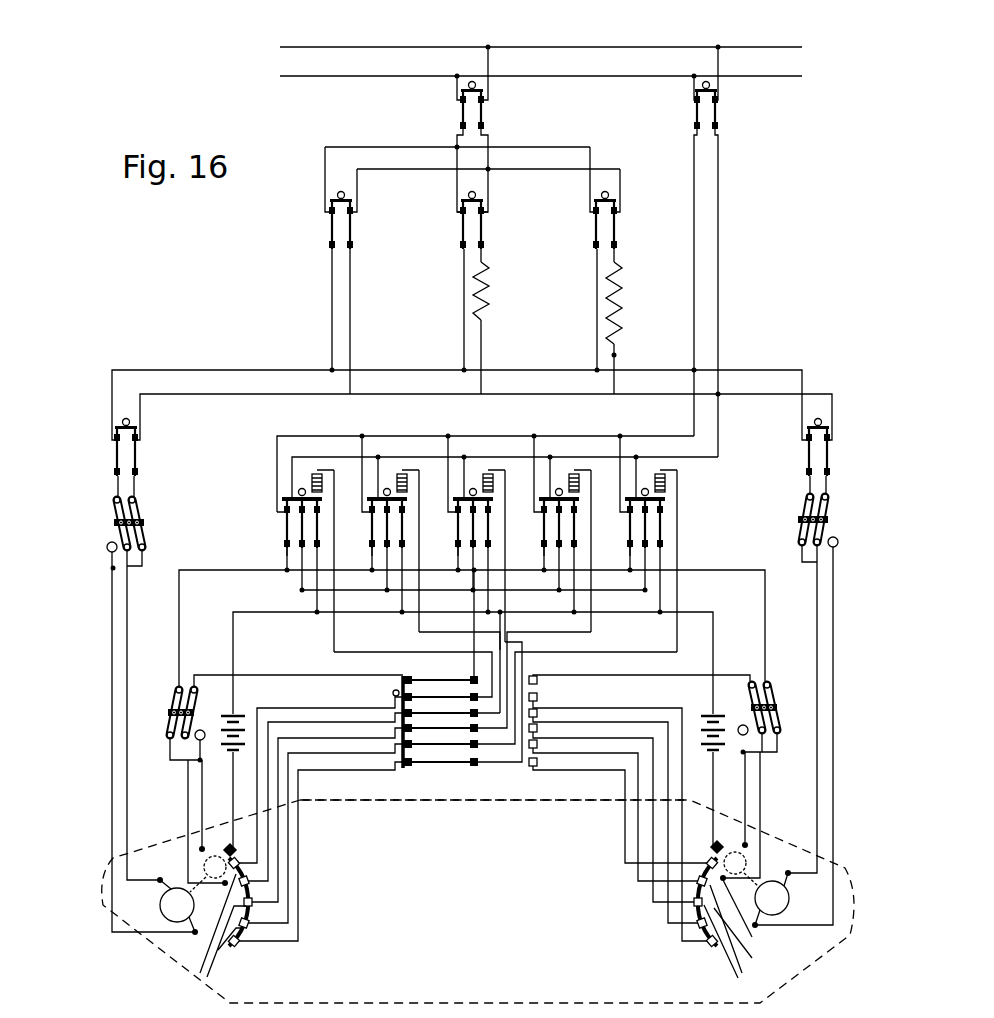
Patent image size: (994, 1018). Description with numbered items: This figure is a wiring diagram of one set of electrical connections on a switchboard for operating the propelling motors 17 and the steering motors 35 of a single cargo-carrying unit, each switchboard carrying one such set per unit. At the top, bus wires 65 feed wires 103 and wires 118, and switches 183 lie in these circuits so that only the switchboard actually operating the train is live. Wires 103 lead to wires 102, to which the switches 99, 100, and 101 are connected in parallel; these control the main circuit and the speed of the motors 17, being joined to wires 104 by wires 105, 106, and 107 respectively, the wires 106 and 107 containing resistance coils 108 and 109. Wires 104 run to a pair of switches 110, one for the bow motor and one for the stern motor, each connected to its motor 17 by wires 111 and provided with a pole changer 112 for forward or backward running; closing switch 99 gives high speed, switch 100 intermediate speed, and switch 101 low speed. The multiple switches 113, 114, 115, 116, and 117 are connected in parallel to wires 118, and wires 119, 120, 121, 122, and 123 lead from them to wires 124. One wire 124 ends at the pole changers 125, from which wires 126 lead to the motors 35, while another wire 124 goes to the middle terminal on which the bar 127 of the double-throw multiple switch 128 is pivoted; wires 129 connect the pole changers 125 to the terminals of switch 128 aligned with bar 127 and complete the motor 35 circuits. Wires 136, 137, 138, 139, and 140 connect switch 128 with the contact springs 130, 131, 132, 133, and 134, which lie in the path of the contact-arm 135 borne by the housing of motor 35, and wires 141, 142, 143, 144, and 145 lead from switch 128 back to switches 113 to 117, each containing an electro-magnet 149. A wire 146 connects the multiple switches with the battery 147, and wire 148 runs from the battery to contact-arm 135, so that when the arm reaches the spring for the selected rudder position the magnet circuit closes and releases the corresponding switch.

The bus wires 65 is at (572, 47).
The wires 103 is at (457, 92).
The switches 183 is at (489, 119).
The wires 102 is at (380, 147).
The switch 99 is at (331, 229).
The switch 100 is at (463, 231).
The switch 101 is at (597, 231).
The wires 105 is at (331, 350).
The wires 106 is at (463, 360).
The wires 107 is at (596, 360).
The resistance coil 108 is at (486, 291).
The resistance coil 109 is at (621, 300).
The wires 104 is at (190, 370).
The multiple switch 116 is at (542, 524).
The wires 118 is at (719, 172).
The switches 110 is at (113, 456).
The pole changer 112 is at (115, 524).
The wires 111 is at (112, 647).
The multiple switch 113 is at (285, 526).
The multiple switch 114 is at (370, 526).
The multiple switch 115 is at (456, 524).
The multiple switch 117 is at (628, 524).
The electro-magnets 149 is at (314, 482).
The wire 119 is at (302, 553).
The wire 120 is at (387, 553).
The wire 121 is at (473, 553).
The wire 122 is at (559, 553).
The wire 123 is at (645, 553).
The wires 124 is at (207, 570).
The wire 146 is at (246, 612).
The wire 141 is at (362, 652).
The wire 142 is at (426, 633).
The wire 143 is at (514, 632).
The wire 144 is at (528, 642).
The wire 145 is at (620, 652).
The bar 127 is at (430, 679).
The double-throw multiple switch 128 is at (392, 693).
The wires 129 is at (270, 675).
The wire 136 is at (292, 708).
The wire 137 is at (297, 722).
The wire 138 is at (308, 738).
The wire 139 is at (316, 753).
The wire 140 is at (324, 770).
The battery 147 is at (236, 714).
The wire 148 is at (713, 784).
The pole changers 125 is at (172, 716).
The wires 126 is at (188, 780).
The motor 17 is at (474, 902).
The motor 35 is at (204, 866).
The contact-arm 135 is at (229, 846).
The contact spring 130 is at (194, 933).
The contact spring 131 is at (458, 924).
The contact spring 132 is at (470, 949).
The contact spring 133 is at (760, 962).
The contact spring 134 is at (243, 943).